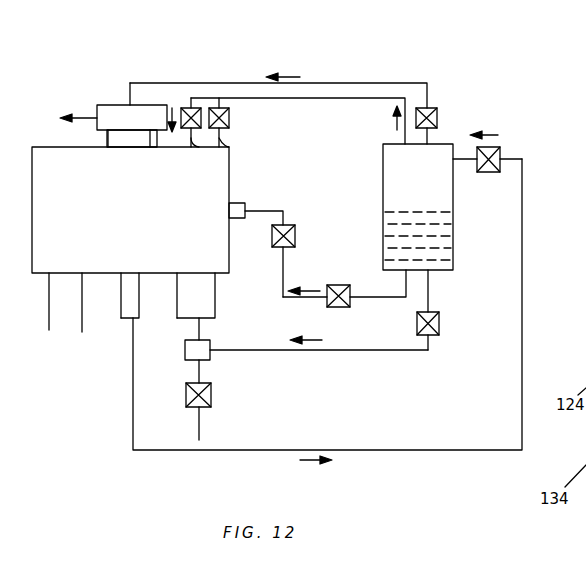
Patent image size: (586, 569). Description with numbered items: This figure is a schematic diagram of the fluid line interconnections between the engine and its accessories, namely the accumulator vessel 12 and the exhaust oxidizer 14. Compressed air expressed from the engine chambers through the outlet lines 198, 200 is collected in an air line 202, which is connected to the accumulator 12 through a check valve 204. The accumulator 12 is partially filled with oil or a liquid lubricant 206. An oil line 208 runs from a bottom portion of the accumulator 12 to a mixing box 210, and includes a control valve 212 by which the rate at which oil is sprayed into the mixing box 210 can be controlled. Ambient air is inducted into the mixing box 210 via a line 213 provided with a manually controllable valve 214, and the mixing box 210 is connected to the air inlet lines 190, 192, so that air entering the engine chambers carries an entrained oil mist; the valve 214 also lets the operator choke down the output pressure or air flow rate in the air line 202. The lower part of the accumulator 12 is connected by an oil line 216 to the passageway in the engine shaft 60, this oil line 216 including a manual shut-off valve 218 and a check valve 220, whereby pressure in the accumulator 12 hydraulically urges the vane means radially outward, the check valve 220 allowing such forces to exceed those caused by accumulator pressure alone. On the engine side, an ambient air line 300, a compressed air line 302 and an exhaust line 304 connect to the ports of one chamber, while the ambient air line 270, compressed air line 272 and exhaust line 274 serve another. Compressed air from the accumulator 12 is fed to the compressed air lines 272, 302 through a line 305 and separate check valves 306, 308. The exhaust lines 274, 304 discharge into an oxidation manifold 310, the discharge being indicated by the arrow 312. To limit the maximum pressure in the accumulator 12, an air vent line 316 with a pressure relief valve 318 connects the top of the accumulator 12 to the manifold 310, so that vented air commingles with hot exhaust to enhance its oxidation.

The accumulator vessel 12 is at (382, 198).
The exhaust oxidizer 14 is at (88, 102).
The engine shaft 60 is at (250, 200).
The air inlet line 190 is at (177, 288).
The air inlet line 192 is at (216, 286).
The outlet line 198 is at (118, 290).
The outlet line 200 is at (138, 288).
The air line 202 is at (288, 450).
The check valve 204 is at (500, 150).
The oil or liquid lubricant 206 is at (436, 240).
The oil line 208 is at (318, 352).
The mixing box 210 is at (211, 343).
The control valve 212 is at (440, 318).
The line 213 is at (200, 425).
The manually controllable valve 214 is at (212, 396).
The oil line 216 is at (302, 298).
The manual shut-off valve 218 is at (340, 307).
The check valve 220 is at (294, 226).
The ambient air line 270 is at (82, 308).
The compressed air line 272 is at (222, 136).
The exhaust line 274 is at (152, 143).
The ambient air line 300 is at (48, 306).
The compressed air line 302 is at (198, 145).
The exhaust line 304 is at (103, 138).
The line 305 is at (322, 98).
The check valve 306 is at (232, 120).
The check valve 308 is at (200, 106).
The oxidation manifold 310 is at (118, 105).
The arrow 312 is at (90, 118).
The air vent line 316 is at (388, 83).
The pressure relief valve 318 is at (437, 114).